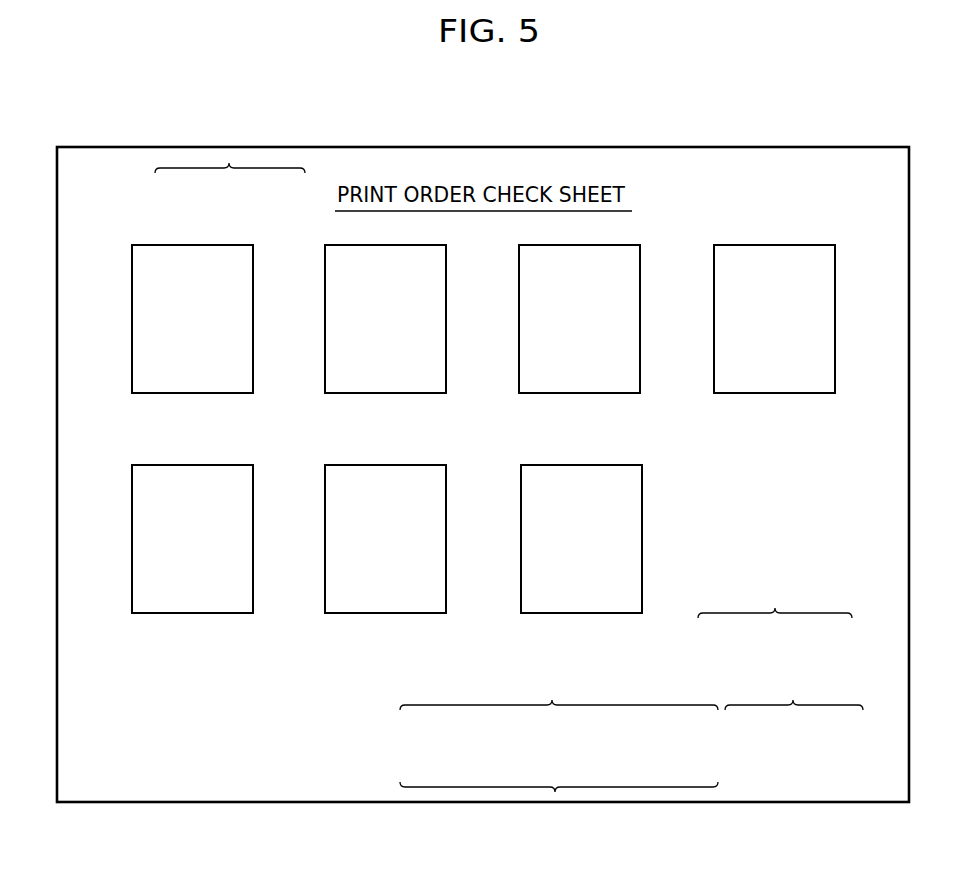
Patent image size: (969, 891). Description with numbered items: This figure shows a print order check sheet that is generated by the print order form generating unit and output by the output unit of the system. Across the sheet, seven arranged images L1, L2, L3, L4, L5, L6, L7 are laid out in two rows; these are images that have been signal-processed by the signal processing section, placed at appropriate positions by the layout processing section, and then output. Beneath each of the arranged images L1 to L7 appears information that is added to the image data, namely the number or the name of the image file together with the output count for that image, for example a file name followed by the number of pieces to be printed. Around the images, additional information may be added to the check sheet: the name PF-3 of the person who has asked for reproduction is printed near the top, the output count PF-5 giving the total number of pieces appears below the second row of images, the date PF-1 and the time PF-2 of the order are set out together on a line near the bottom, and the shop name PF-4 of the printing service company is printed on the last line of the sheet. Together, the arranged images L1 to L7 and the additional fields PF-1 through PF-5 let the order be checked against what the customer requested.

The arranged image L1 is at (253, 284).
The arranged image L2 is at (446, 284).
The arranged image L3 is at (640, 284).
The arranged image L4 is at (835, 284).
The arranged image L5 is at (253, 502).
The arranged image L6 is at (446, 502).
The arranged image L7 is at (642, 502).
The date PF-1 is at (559, 704).
The time PF-2 is at (796, 704).
The name of a person who has asked reproduction PF-3 is at (229, 163).
The shop name PF-4 is at (555, 792).
The output count PF-5 is at (771, 612).